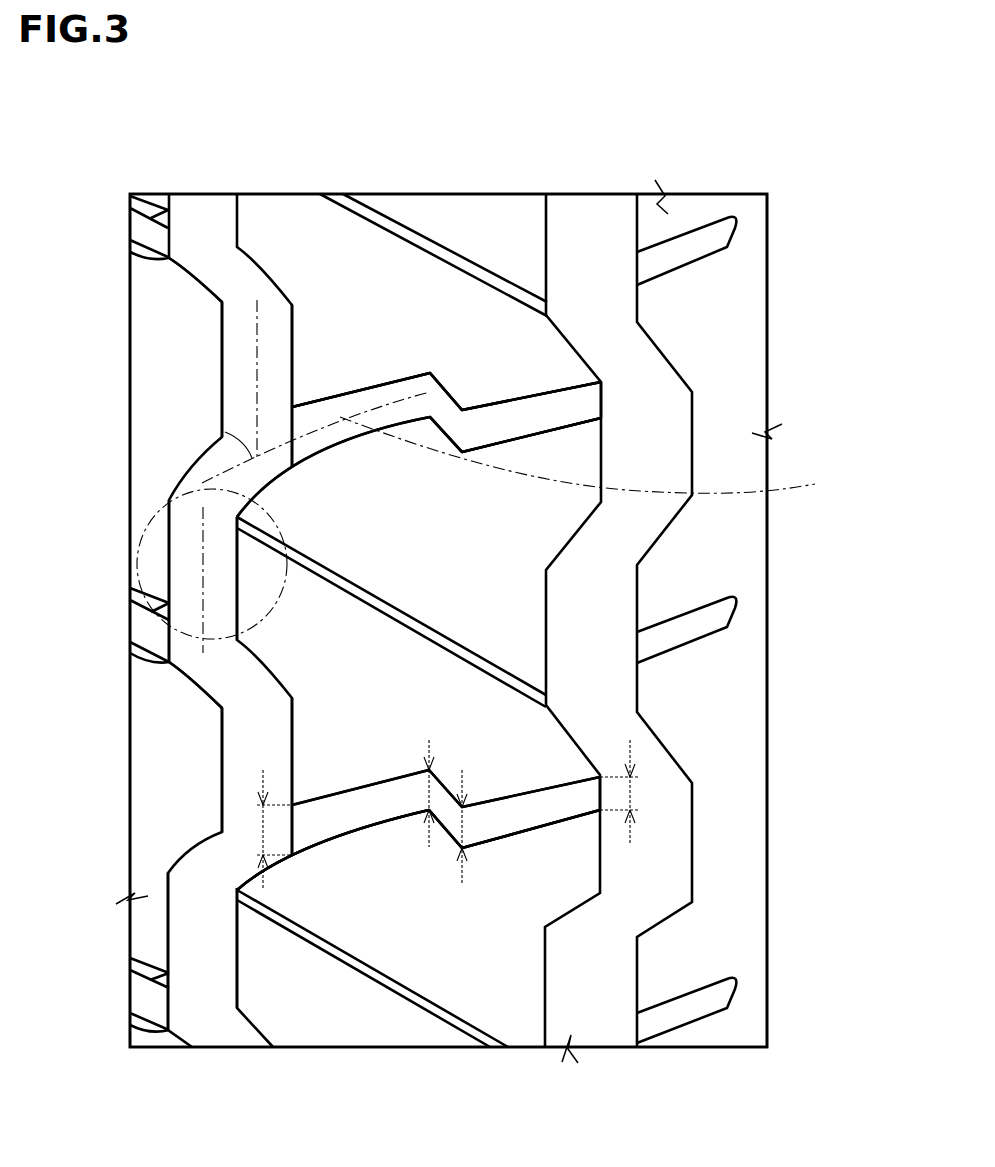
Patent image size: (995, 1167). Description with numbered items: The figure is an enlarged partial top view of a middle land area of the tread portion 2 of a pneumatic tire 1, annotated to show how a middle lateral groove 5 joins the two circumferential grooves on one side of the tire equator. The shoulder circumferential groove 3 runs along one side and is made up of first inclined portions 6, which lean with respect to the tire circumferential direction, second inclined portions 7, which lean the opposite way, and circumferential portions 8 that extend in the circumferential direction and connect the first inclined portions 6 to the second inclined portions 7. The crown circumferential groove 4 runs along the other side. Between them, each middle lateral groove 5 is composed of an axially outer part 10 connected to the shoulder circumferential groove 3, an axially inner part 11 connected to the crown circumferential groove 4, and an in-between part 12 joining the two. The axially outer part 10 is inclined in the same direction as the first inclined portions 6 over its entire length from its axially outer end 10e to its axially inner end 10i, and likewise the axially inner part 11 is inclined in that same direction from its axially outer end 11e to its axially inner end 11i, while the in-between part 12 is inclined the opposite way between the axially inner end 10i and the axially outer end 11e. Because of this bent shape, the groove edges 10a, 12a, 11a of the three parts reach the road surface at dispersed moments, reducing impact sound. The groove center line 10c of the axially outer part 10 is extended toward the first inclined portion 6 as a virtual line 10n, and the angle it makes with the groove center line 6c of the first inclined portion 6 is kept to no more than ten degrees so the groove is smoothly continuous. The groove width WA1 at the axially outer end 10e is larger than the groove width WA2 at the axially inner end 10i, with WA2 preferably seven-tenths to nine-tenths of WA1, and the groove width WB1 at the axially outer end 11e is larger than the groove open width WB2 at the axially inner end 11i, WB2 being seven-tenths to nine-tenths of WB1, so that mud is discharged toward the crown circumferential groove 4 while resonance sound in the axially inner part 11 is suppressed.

The pneumatic tire 1 is at (797, 133).
The tread portion 2 is at (703, 175).
The shoulder circumferential groove 3 is at (164, 581).
The crown circumferential groove 4 is at (588, 243).
The middle lateral groove 5 is at (567, 410).
The first inclined portion 6 is at (207, 478).
The groove center line 6c is at (140, 500).
The second inclined portion 7 is at (223, 273).
The circumferential portion 8 is at (240, 372).
The axially outer part 10 is at (447, 627).
The groove edge 10a is at (347, 390).
The groove center line 10c is at (537, 445).
The axially outer end 10e is at (290, 867).
The axially inner end 10i is at (420, 823).
The virtual line 10n is at (137, 637).
The axially inner part 11 is at (523, 813).
The groove edge 11a is at (530, 393).
The axially outer end 11e is at (480, 787).
The axially inner end 11i is at (607, 820).
The in-between part 12 is at (448, 812).
The groove edge 12a is at (447, 390).
The groove width WA1 is at (262, 830).
The groove width WA2 is at (429, 770).
The groove width WB1 is at (548, 790).
The groove open width WB2 is at (472, 800).